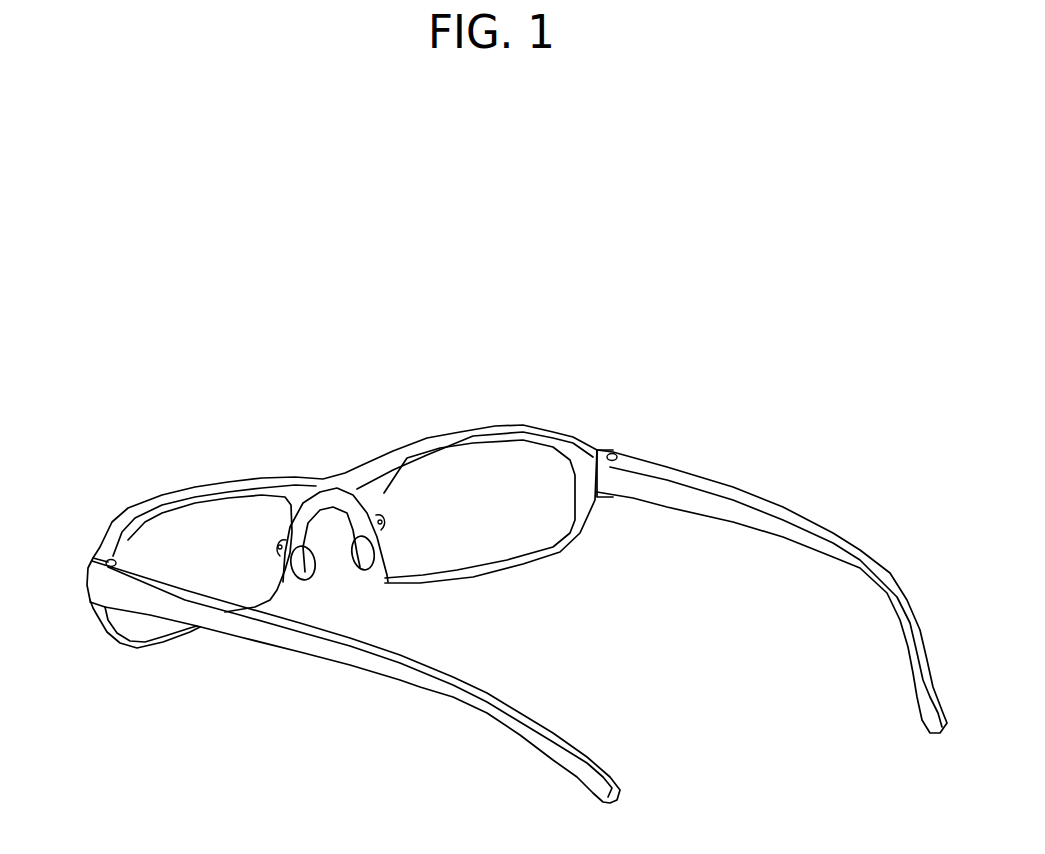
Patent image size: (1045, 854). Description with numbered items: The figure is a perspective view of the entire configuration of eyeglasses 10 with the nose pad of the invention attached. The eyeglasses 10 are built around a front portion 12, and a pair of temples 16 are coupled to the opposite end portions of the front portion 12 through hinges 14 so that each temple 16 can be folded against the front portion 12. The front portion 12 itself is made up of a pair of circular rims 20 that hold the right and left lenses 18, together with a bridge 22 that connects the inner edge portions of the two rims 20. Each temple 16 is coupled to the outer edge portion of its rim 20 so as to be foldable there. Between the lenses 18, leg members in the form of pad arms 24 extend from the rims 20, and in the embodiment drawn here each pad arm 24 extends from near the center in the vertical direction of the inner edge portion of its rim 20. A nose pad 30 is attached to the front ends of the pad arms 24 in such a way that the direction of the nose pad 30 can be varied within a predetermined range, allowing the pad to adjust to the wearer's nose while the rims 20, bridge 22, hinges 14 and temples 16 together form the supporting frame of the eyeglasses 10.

The eyeglasses 10 is at (578, 228).
The front portion 12 is at (520, 568).
The hinge 14 is at (115, 562).
The temple 16 is at (781, 507).
The lens 18 is at (153, 552).
The rim 20 is at (176, 494).
The bridge 22 is at (317, 479).
The pad arm 24 is at (380, 520).
The nose pad 30 is at (313, 580).